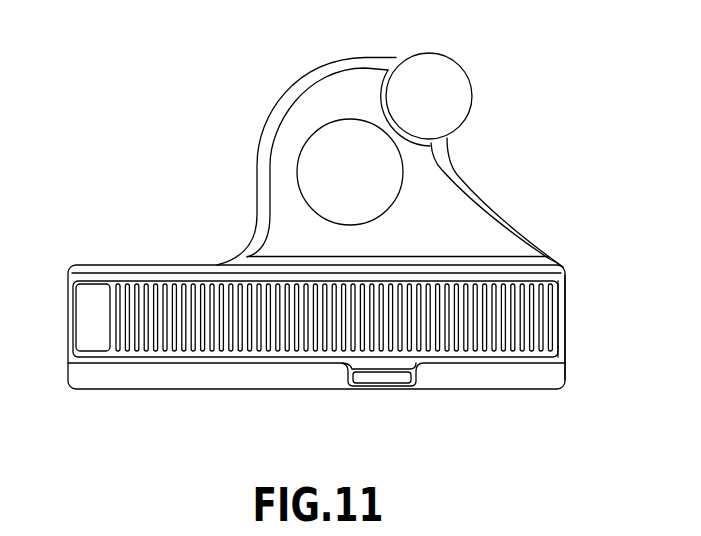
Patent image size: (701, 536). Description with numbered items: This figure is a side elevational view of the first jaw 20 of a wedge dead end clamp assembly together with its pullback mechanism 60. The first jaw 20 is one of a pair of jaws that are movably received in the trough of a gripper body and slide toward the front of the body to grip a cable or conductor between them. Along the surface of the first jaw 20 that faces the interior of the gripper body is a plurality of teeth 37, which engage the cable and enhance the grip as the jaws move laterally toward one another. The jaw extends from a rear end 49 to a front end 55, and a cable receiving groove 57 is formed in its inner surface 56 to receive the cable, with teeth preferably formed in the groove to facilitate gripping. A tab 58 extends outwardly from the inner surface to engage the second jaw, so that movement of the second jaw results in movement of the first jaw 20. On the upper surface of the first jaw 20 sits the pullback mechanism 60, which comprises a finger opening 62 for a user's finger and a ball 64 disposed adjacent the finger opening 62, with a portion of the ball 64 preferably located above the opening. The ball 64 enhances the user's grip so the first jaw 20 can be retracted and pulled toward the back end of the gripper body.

The first jaw 20 is at (218, 244).
The pullback mechanism 60 is at (271, 112).
The finger opening 62 is at (300, 152).
The ball 64 is at (462, 101).
The inner surface 56 is at (562, 269).
The front end 55 is at (566, 331).
The rear end 49 is at (68, 326).
The cable receiving groove 57 is at (150, 348).
The teeth 37 is at (517, 346).
The tab 58 is at (383, 379).